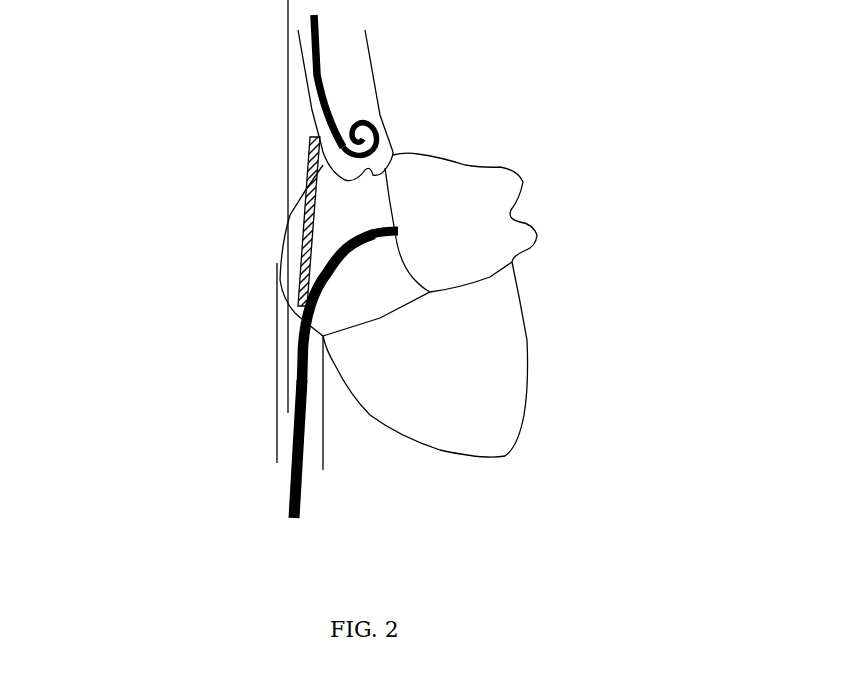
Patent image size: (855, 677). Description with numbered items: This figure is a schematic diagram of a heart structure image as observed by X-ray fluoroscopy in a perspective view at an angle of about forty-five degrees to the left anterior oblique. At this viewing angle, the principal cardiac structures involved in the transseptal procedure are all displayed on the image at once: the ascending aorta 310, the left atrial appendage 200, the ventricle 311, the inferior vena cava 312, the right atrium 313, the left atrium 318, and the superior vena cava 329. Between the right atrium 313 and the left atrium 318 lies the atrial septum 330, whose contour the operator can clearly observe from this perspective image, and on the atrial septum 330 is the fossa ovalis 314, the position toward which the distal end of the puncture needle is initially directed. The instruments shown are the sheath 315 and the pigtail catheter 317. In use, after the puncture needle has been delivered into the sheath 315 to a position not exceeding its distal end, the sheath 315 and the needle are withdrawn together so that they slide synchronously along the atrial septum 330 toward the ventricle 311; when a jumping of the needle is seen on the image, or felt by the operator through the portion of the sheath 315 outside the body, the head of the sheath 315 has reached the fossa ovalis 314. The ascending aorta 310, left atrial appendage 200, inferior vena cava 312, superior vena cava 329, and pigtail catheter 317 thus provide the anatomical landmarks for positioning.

The left atrial appendage 200 is at (526, 181).
The ascending aorta 310 is at (365, 87).
The ventricle 311 is at (466, 368).
The inferior vena cava 312 is at (319, 409).
The right atrium 313 is at (352, 293).
The fossa ovalis 314 is at (401, 237).
The sheath 315 is at (293, 423).
The pigtail catheter 317 is at (311, 79).
The left atrium 318 is at (420, 193).
The superior vena cava 329 is at (300, 143).
The atrial septum 330 is at (424, 278).